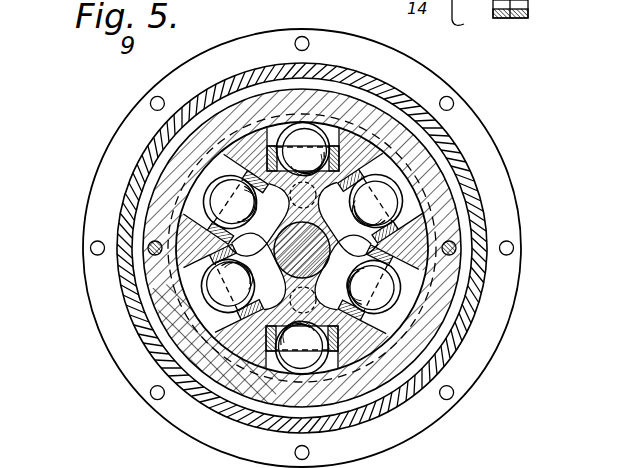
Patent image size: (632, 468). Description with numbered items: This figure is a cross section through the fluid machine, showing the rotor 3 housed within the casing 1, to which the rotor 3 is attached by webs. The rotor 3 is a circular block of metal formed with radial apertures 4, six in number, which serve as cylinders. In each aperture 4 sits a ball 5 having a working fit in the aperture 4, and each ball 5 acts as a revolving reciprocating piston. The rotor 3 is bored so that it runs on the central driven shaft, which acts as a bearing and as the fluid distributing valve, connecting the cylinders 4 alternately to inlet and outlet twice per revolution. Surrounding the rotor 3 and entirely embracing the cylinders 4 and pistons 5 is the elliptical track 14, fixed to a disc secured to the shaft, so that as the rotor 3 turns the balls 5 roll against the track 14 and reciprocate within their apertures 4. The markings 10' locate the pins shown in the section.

The casing 1 is at (505, 305).
The rotor 3 is at (250, 350).
The radial apertures 4 is at (272, 351).
The ball 5 is at (336, 165).
The pin 10' is at (301, 247).
The elliptical track 14 is at (378, 339).